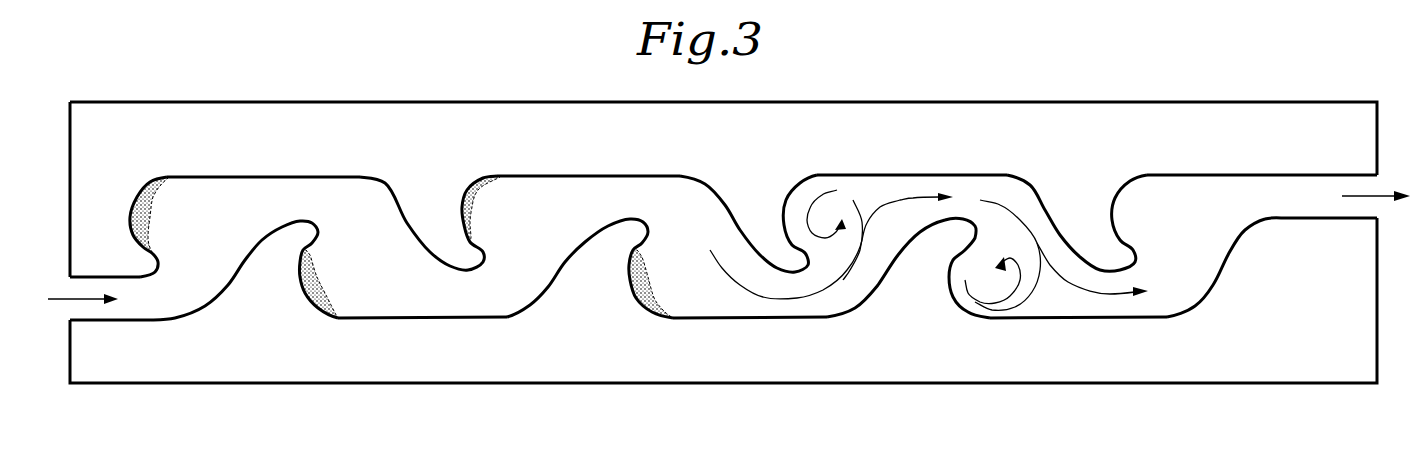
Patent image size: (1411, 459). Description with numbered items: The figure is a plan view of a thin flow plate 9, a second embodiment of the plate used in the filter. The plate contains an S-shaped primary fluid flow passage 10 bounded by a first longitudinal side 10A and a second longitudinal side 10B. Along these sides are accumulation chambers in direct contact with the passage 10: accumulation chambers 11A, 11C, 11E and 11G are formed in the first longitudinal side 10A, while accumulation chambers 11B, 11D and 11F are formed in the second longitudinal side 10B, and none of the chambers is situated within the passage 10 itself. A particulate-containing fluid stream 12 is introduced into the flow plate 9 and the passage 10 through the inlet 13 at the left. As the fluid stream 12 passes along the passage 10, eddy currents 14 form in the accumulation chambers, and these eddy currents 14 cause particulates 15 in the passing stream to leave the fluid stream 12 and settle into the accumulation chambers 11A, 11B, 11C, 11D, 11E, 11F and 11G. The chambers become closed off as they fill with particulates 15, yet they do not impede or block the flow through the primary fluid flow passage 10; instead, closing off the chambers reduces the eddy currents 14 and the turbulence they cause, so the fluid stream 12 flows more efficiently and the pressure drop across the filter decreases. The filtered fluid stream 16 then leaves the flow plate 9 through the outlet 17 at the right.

The flow plate 9 is at (184, 85).
The primary fluid flow passage 10 is at (257, 184).
The first longitudinal side 10A is at (323, 175).
The second longitudinal side 10B is at (415, 320).
The accumulation chamber 11A is at (133, 206).
The accumulation chamber 11B is at (303, 300).
The accumulation chamber 11C is at (465, 190).
The accumulation chamber 11D is at (633, 303).
The accumulation chamber 11E is at (790, 197).
The accumulation chamber 11F is at (957, 300).
The accumulation chamber 11G is at (1120, 190).
The fluid stream 12 is at (78, 298).
The inlet 13 is at (111, 321).
The eddy currents 14 is at (838, 190).
The particulates 15 is at (148, 182).
The filtered fluid stream 16 is at (1368, 193).
The outlet 17 is at (1357, 220).